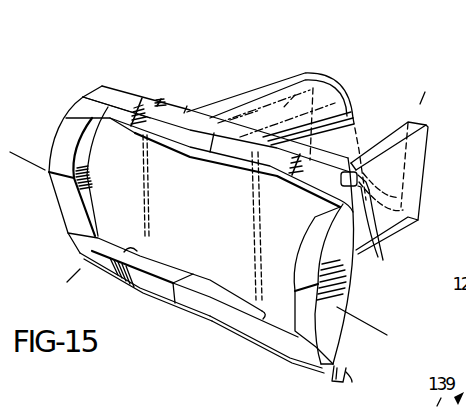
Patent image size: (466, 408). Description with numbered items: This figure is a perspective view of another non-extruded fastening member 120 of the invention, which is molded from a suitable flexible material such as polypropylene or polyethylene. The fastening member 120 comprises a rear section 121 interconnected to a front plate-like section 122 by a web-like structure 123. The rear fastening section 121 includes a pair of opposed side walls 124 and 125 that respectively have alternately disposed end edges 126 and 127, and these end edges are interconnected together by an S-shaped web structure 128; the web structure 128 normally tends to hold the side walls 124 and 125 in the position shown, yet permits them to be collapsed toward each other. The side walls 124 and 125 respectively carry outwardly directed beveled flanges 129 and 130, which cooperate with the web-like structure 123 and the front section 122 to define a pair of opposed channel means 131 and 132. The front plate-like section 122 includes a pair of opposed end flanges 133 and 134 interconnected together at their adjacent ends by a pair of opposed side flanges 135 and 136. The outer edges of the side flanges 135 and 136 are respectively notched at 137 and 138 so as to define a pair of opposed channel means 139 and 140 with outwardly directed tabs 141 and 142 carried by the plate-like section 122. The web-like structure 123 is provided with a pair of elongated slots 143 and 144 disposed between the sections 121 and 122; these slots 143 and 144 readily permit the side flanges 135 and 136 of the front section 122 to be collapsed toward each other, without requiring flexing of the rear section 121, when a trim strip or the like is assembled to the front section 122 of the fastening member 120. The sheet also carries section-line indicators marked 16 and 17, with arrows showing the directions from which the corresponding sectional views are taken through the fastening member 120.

The fastening member 120 is at (246, 54).
The rear section 121 is at (349, 80).
The front plate-like section 122 is at (97, 67).
The web-like structure 123 is at (123, 148).
The side wall 124 is at (415, 161).
The side wall 125 is at (295, 95).
The end edge 126 is at (395, 240).
The end edge 127 is at (266, 90).
The S-shaped web structure 128 is at (348, 118).
The beveled flange 129 is at (365, 177).
The beveled flange 130 is at (218, 103).
The channel means 131 is at (363, 238).
The channel means 132 is at (187, 102).
The end flange 133 is at (346, 282).
The end flange 134 is at (65, 146).
The side flange 135 is at (262, 182).
The side flange 136 is at (192, 314).
The notch 137 is at (346, 266).
The notch 138 is at (330, 373).
The channel means 139 is at (253, 151).
The channel means 140 is at (336, 383).
The tab 141 is at (117, 90).
The tab 142 is at (348, 376).
The elongated slot 143 is at (168, 155).
The elongated slot 144 is at (148, 266).
The section line 16- 16 is at (443, 107).
The section line 17- 17 is at (17, 138).